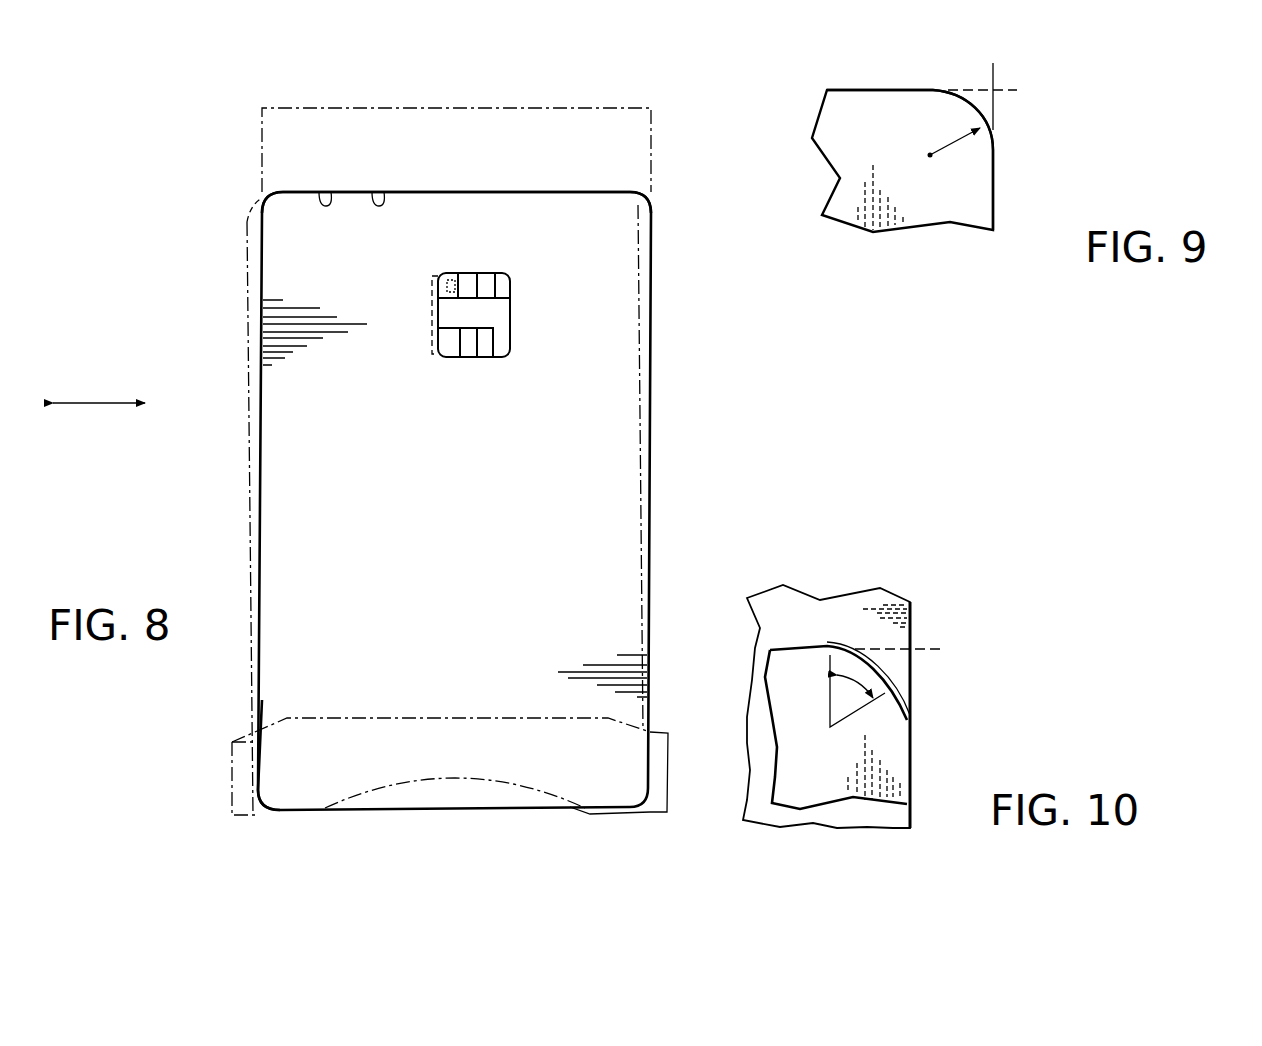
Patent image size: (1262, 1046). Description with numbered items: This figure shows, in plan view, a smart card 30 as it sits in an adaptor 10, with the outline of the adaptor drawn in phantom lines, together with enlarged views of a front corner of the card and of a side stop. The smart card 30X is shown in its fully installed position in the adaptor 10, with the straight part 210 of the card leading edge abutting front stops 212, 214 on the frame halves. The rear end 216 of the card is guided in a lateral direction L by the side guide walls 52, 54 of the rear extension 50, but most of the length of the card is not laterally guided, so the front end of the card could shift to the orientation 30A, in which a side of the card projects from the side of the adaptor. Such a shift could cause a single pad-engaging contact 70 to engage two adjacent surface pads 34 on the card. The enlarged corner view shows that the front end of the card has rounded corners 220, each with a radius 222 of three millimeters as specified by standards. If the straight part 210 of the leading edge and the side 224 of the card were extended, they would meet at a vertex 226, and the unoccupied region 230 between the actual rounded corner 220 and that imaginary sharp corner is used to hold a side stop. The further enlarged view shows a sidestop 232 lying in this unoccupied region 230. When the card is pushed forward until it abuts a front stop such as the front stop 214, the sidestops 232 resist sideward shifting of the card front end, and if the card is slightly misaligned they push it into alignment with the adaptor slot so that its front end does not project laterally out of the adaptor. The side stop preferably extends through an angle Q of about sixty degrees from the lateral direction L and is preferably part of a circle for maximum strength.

In FIG. 8, the adaptor 10 is at (287, 104).
In FIG. 9, the smart card 30 is at (808, 138).
In FIG. 8, the orientation of the smart card 30A is at (247, 267).
In FIG. 8, the smart card in fully installed position 30X is at (257, 510).
In FIG. 8, the surface pads 34 is at (482, 347).
In FIG. 8, the pad-engaging contact 70 is at (455, 282).
In FIG. 8, the rear extension 50 is at (232, 750).
In FIG. 8, the side guide wall 52 is at (628, 808).
In FIG. 8, the side guide wall 54 is at (260, 812).
In FIG. 8, the straight part of the card leading edge 210 is at (480, 192).
In FIG. 9, the straight part of the card leading edge 210 is at (847, 90).
In FIG. 8, the front stop 212 is at (376, 192).
In FIG. 8, the front stop 214 is at (322, 192).
In FIG. 10, the front stop 214 is at (742, 658).
In FIG. 8, the rear end of the smart card 216 is at (257, 770).
In FIG. 8, the rounded corner 220 is at (272, 192).
In FIG. 9, the rounded corner 220 is at (967, 103).
In FIG. 9, the radius 222 is at (980, 125).
In FIG. 9, the side of the card 224 is at (993, 200).
In FIG. 9, the vertex 226 is at (975, 101).
In FIG. 9, the unoccupied region 230 is at (987, 108).
In FIG. 10, the unoccupied region 230 is at (893, 658).
In FIG. 10, the sidestop 232 is at (905, 713).
In FIG. 10, the angle Q is at (830, 698).
In FIG. 8, the lateral direction L is at (105, 400).